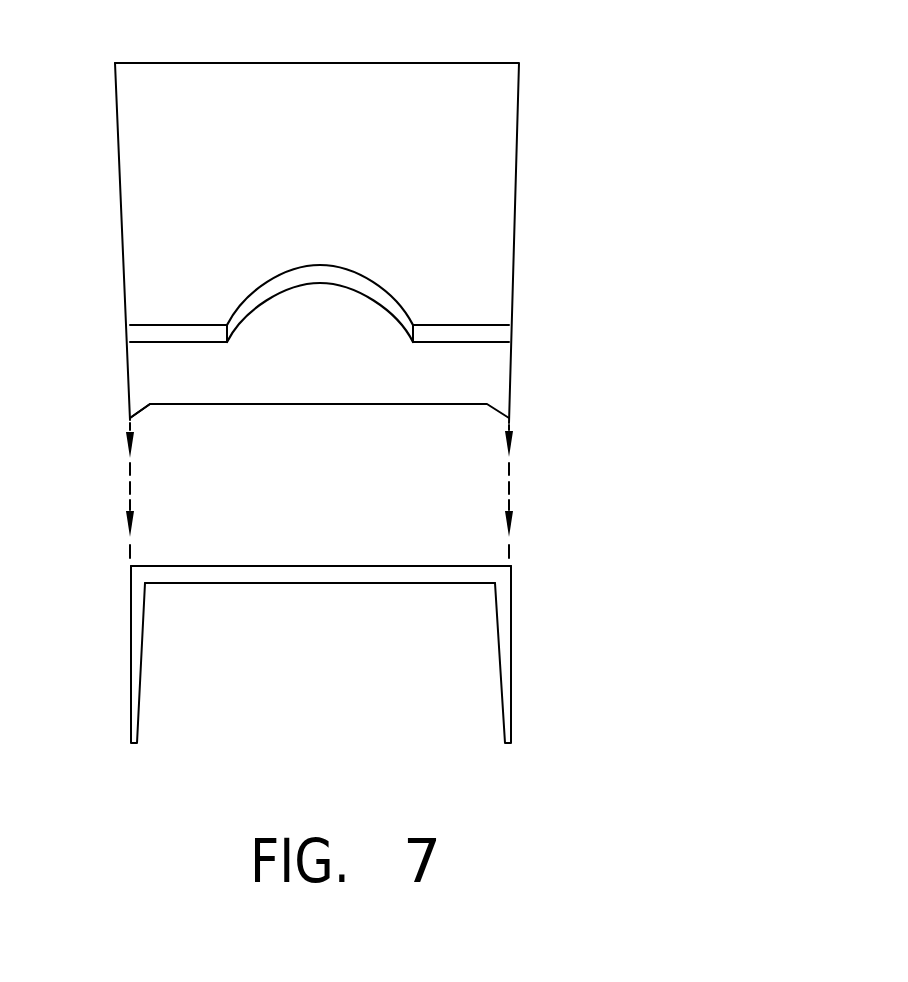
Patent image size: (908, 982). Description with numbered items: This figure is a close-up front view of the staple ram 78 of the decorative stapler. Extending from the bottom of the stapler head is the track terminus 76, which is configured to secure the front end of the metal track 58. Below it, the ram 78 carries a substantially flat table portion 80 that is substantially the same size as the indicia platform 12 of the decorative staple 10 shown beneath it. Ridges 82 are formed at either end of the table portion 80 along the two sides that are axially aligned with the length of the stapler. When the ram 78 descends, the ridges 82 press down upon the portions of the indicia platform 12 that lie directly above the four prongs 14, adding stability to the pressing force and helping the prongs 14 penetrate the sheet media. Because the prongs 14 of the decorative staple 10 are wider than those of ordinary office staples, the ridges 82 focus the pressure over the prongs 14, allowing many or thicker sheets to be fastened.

The decorative staple 10 is at (668, 564).
The indicia platform 12 is at (272, 566).
The prongs 14 is at (505, 612).
The metal track 58 is at (493, 332).
The track terminus 76 is at (482, 205).
The ram 78 is at (490, 370).
The table portion 80 is at (283, 404).
The ridges 82 is at (130, 418).